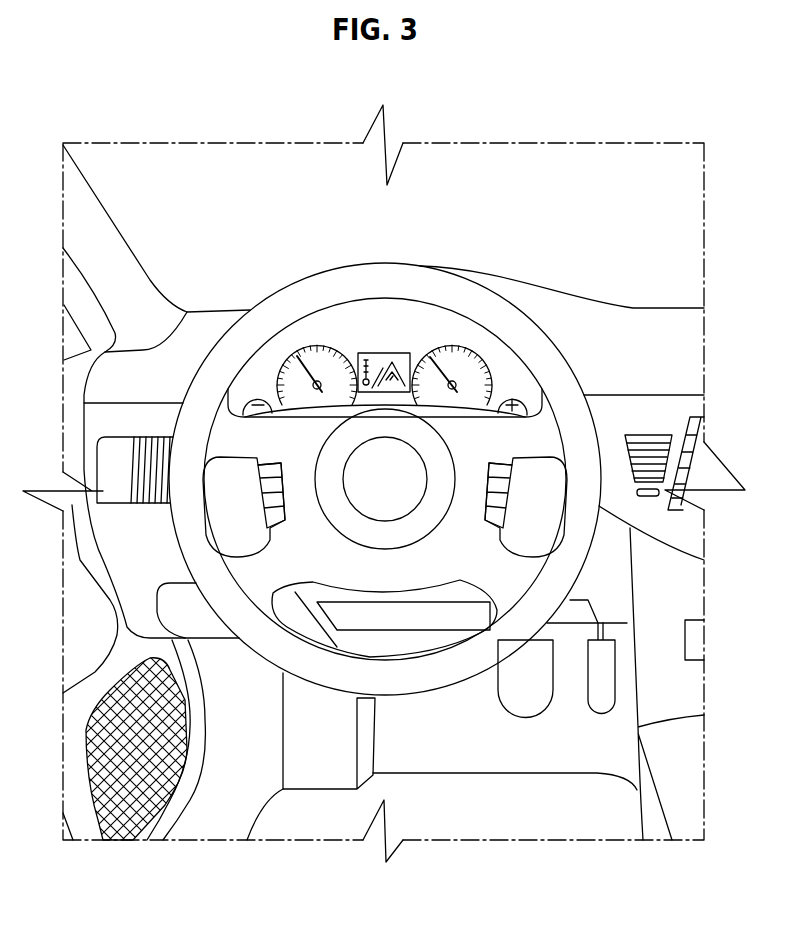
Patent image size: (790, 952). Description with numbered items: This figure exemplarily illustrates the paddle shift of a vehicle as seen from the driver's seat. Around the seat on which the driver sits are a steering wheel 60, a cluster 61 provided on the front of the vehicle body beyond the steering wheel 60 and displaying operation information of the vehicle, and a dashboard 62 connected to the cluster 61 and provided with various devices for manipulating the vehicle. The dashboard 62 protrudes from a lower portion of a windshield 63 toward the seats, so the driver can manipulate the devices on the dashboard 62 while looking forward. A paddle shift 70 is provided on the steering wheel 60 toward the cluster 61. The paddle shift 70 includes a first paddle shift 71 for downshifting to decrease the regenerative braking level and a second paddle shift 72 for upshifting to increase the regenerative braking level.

The steering wheel 60 is at (416, 275).
The cluster 61 is at (343, 333).
The dashboard 62 is at (660, 330).
The windshield 63 is at (540, 165).
The paddle shift 70 is at (393, 321).
The first paddle shift 71 is at (253, 393).
The second paddle shift 72 is at (512, 392).